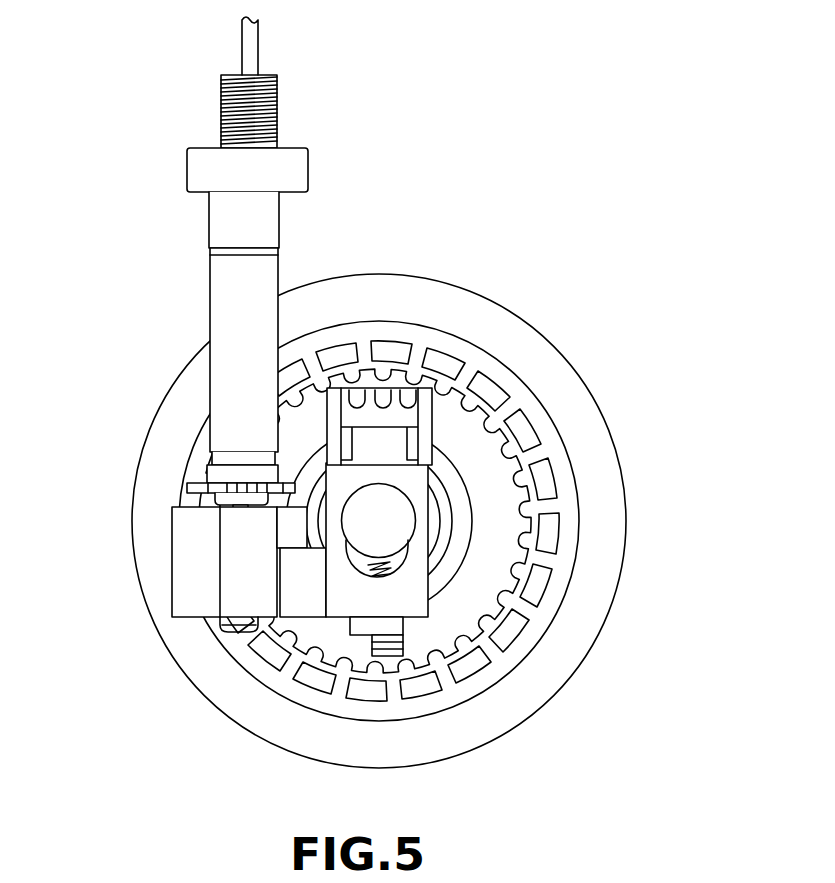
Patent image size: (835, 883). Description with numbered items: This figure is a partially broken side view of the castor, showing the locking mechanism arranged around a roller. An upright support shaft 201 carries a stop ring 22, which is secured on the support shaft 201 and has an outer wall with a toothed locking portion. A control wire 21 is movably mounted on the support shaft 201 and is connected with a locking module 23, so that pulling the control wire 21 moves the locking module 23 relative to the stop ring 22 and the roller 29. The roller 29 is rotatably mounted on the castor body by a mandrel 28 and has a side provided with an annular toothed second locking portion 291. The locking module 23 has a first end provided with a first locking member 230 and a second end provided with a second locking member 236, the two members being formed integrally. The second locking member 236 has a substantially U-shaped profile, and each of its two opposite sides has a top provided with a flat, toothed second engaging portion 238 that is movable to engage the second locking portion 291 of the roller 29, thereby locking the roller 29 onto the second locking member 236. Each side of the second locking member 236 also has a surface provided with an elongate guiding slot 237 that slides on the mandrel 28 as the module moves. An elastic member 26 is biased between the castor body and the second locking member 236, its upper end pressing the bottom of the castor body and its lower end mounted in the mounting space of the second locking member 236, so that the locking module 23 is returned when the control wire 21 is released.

The control wire 21 is at (252, 50).
The support shaft 201 is at (297, 172).
The stop ring 22 is at (198, 488).
The locking module 23 is at (192, 620).
The first locking member 230 is at (183, 572).
The second locking member 236 is at (413, 605).
The elongate guiding slot 237 is at (400, 563).
The elastic member 26 is at (387, 573).
The mandrel 28 is at (393, 505).
The second engaging portion 238 is at (395, 402).
The second locking portion 291 is at (500, 430).
The roller 29 is at (603, 488).